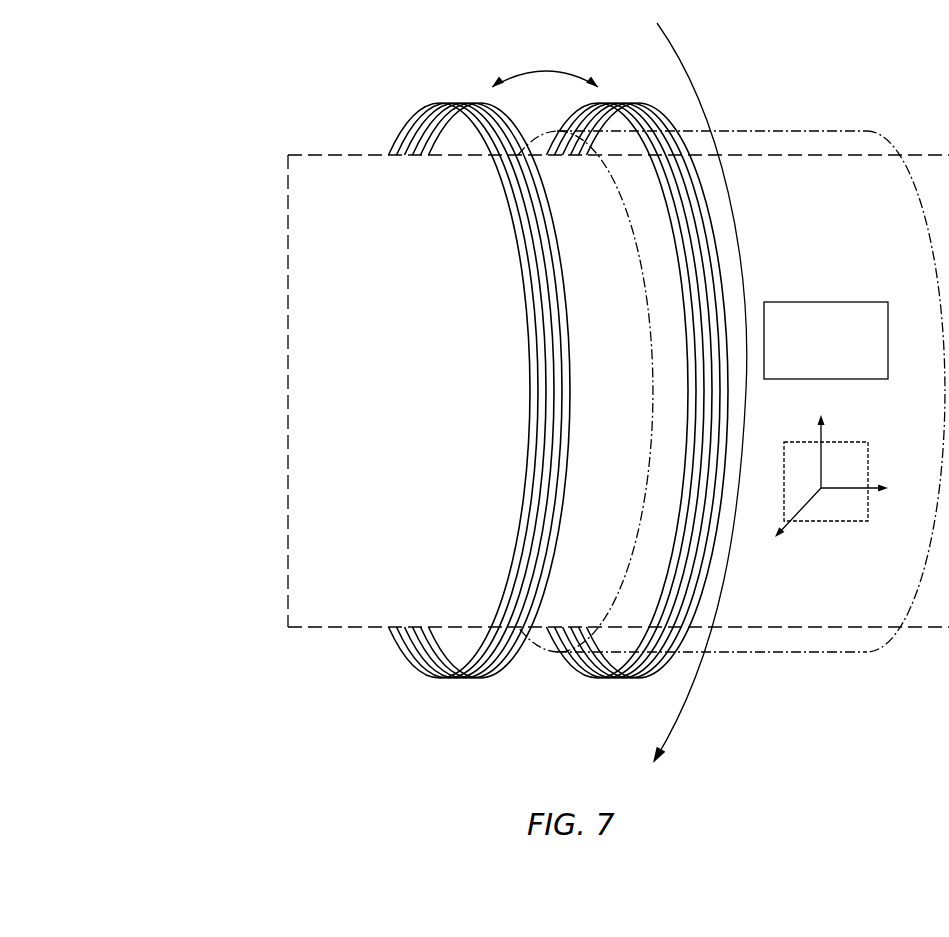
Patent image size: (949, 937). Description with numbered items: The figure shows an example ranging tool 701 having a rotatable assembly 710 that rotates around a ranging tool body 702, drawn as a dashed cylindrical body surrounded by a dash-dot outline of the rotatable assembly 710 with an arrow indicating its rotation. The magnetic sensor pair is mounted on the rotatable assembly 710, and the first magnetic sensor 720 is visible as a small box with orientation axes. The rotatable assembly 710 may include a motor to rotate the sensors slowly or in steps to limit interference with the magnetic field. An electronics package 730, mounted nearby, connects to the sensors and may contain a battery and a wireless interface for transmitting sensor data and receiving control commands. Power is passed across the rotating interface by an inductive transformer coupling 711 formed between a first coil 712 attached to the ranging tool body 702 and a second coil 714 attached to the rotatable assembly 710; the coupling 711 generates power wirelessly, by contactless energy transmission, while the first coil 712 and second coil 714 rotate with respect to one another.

The ranging tool 701 is at (262, 473).
The ranging tool body 702 is at (343, 605).
The rotatable assembly 710 is at (835, 652).
The inductive transformer coupling 711 is at (528, 72).
The first coil 712 is at (415, 672).
The second coil 714 is at (587, 678).
The first magnetic sensor 720 is at (850, 453).
The electronics package 730 is at (850, 313).